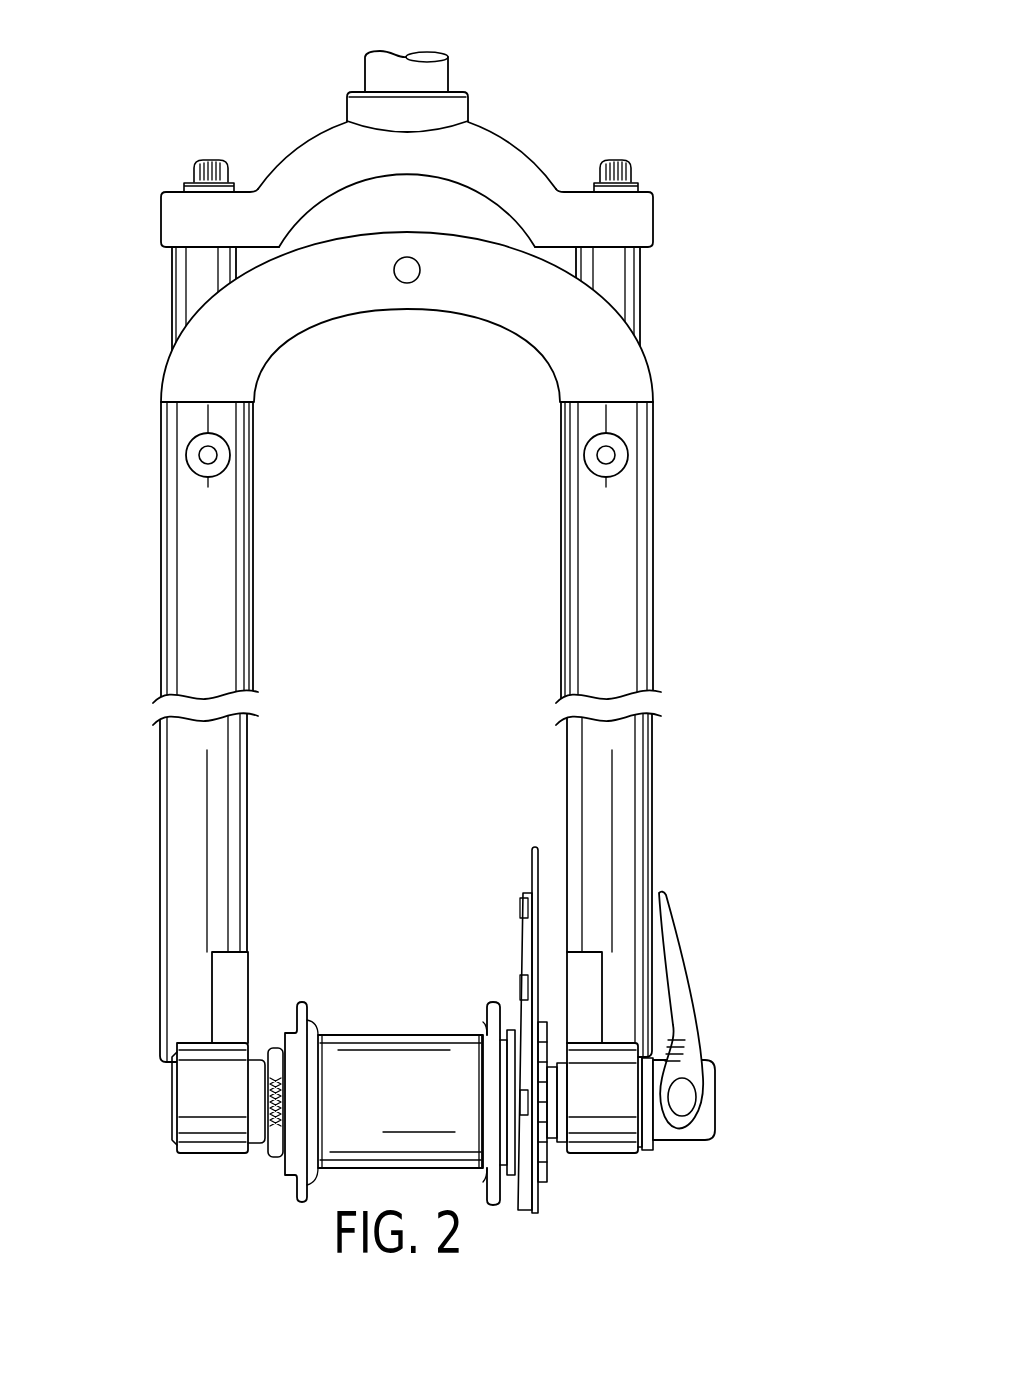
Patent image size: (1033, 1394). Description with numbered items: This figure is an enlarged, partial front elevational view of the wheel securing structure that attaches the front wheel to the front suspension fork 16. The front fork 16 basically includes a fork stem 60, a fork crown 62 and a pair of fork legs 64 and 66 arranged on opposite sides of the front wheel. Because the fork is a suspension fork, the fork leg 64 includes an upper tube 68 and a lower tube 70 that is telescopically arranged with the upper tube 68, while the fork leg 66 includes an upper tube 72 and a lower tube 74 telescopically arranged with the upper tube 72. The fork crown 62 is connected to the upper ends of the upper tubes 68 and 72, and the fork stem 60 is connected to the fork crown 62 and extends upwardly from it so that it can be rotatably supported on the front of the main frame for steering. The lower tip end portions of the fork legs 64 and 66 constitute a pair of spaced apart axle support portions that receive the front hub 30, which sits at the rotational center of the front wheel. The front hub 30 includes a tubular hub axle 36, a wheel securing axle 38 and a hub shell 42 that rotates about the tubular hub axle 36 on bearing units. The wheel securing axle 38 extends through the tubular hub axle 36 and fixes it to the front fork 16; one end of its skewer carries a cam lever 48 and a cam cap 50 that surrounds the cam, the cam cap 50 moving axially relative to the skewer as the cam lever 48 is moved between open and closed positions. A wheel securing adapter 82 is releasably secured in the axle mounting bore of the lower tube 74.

The front suspension fork 16 is at (408, 562).
The fork stem 60 is at (448, 68).
The fork crown 62 is at (660, 183).
The upper tube 68 is at (635, 277).
The upper tube 72 is at (183, 280).
The fork leg 66 is at (163, 438).
The fork leg 64 is at (658, 445).
The lower tube 70 is at (652, 797).
The lower tube 74 is at (160, 950).
The front hub 30 is at (426, 1030).
The hub shell 42 is at (418, 1035).
The tubular hub axle 36 is at (256, 1050).
The cam lever 48 is at (685, 958).
The cam cap 50 is at (710, 1095).
The wheel securing axle 38 is at (716, 1061).
The wheel securing adapter 82 is at (157, 1112).